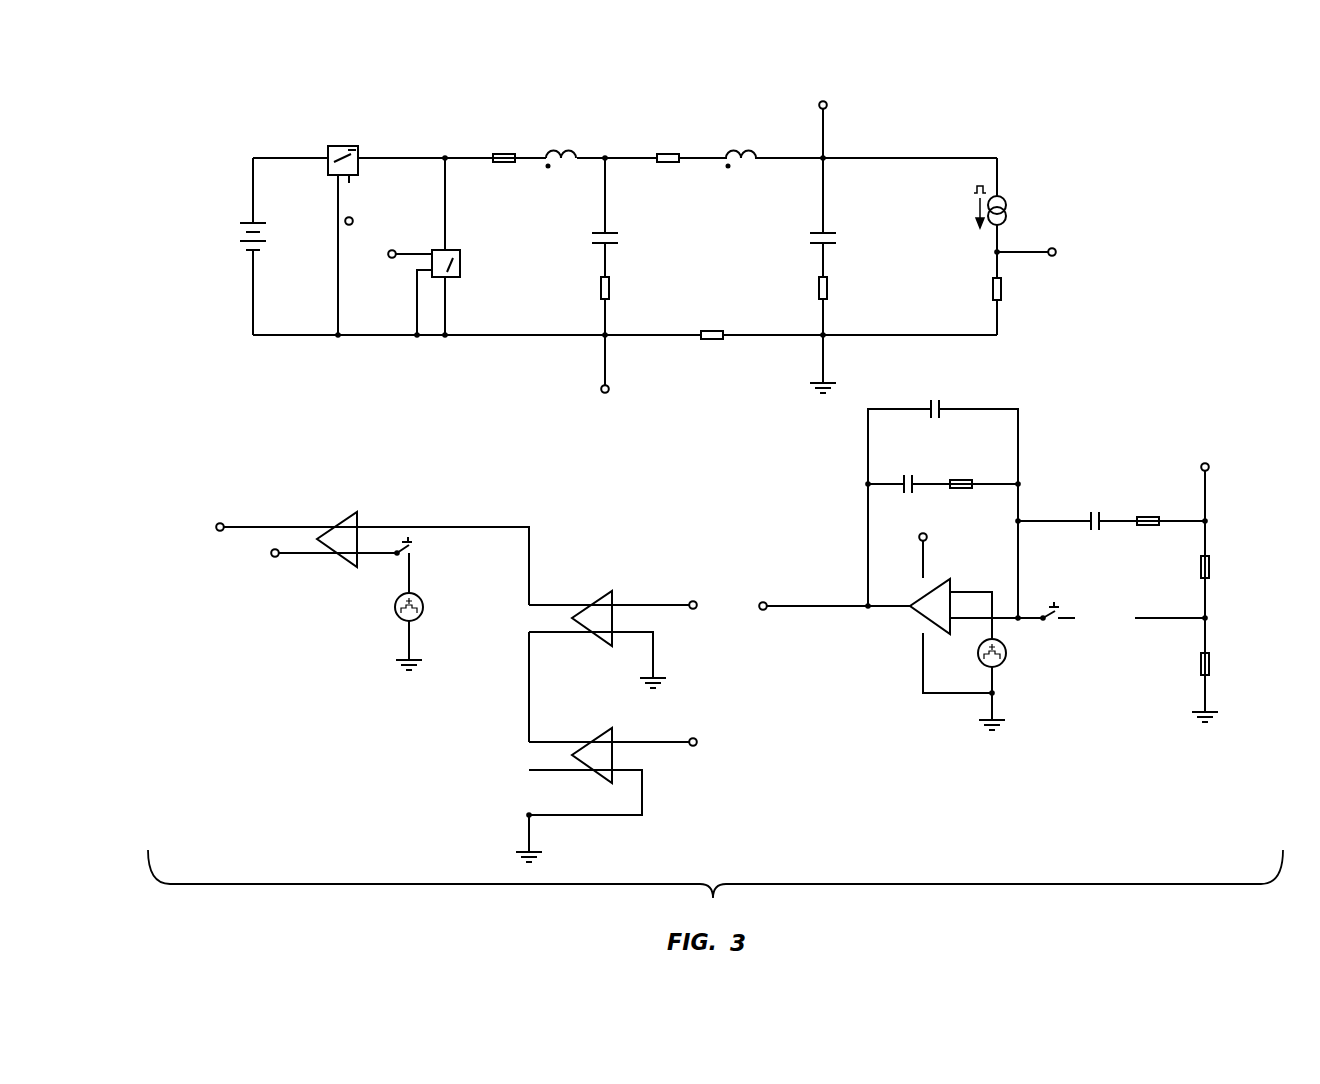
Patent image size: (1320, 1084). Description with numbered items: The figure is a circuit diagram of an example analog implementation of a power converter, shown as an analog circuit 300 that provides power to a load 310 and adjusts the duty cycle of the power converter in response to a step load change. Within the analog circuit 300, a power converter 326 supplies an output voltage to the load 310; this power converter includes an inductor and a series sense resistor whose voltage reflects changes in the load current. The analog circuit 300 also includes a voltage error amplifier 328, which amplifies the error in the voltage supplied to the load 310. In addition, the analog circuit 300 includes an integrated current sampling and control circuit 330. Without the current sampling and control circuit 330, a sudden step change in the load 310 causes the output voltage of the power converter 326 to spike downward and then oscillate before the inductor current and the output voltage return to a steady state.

The analog circuit 300 is at (238, 128).
The power converter 326 is at (523, 112).
The load 310 is at (1020, 157).
The voltage error amplifier 328 is at (1098, 446).
The integrated current sampling and control circuit 330 is at (467, 502).